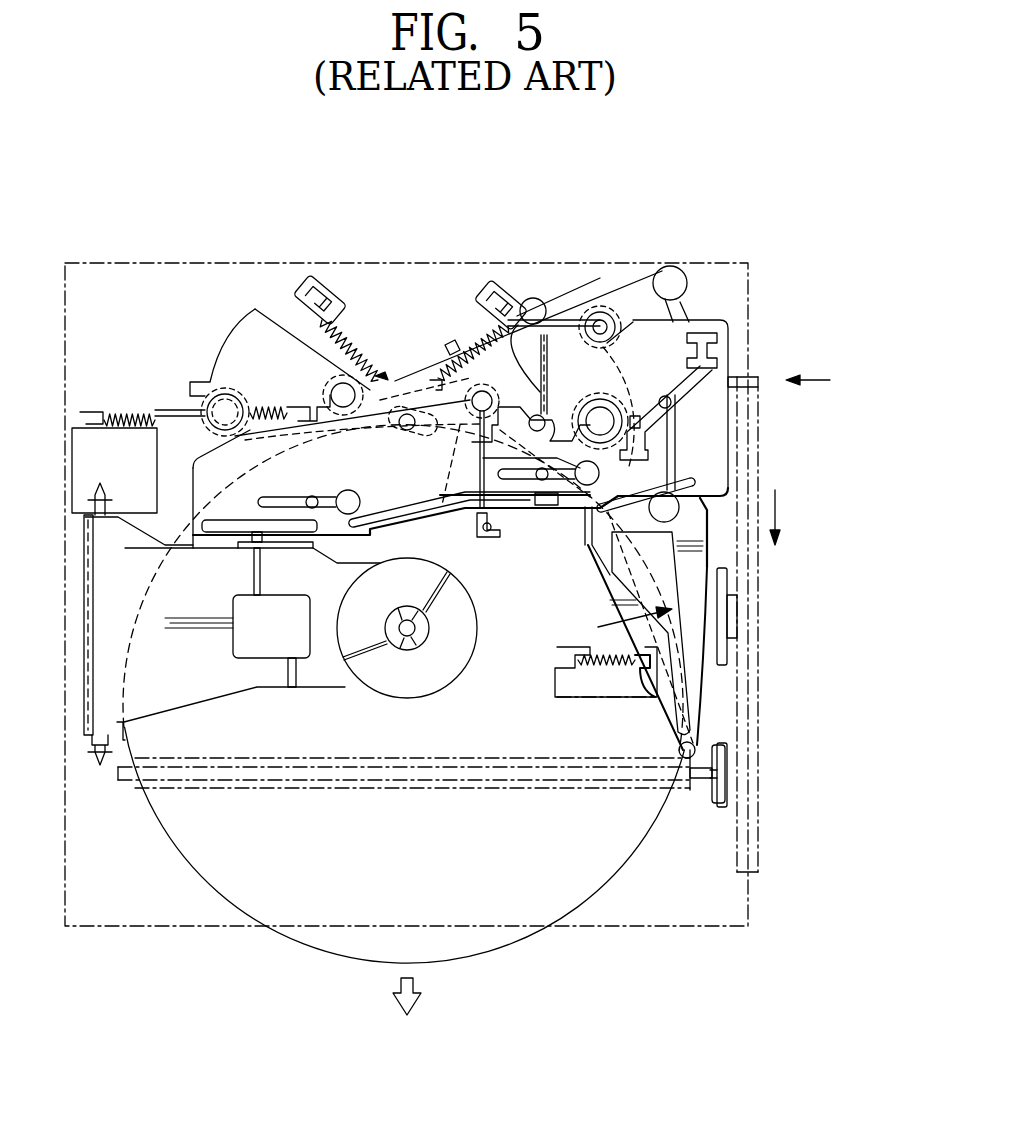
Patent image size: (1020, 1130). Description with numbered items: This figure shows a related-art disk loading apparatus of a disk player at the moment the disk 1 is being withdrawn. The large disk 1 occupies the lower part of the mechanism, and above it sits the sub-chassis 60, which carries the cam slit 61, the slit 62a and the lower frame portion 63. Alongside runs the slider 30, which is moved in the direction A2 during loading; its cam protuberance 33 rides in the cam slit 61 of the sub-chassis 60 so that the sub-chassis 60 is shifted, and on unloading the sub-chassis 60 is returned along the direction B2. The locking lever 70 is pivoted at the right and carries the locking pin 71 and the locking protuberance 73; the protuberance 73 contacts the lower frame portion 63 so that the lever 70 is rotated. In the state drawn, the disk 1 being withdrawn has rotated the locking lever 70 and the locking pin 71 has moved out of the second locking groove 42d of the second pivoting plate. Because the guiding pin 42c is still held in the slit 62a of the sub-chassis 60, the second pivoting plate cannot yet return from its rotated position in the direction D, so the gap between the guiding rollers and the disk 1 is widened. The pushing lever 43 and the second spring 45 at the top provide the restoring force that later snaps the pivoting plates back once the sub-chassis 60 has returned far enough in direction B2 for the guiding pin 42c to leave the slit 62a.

The disk 1 is at (490, 940).
The slider 30 is at (757, 568).
The cam protuberance 33 is at (668, 395).
The guiding pin 42c is at (576, 322).
The second locking groove 42d is at (648, 483).
The pushing lever 43 is at (346, 300).
The second spring 45 is at (483, 302).
The sub-chassis 60 is at (422, 392).
The cam slit 61 is at (703, 340).
The slit 62a is at (478, 395).
The lower frame portion 63 is at (464, 528).
The locking lever 70 is at (696, 673).
The locking pin 71 is at (514, 533).
The locking protuberance 73 is at (483, 537).
The direction A2 is at (406, 1013).
The direction B2 is at (828, 384).
The direction D is at (635, 606).